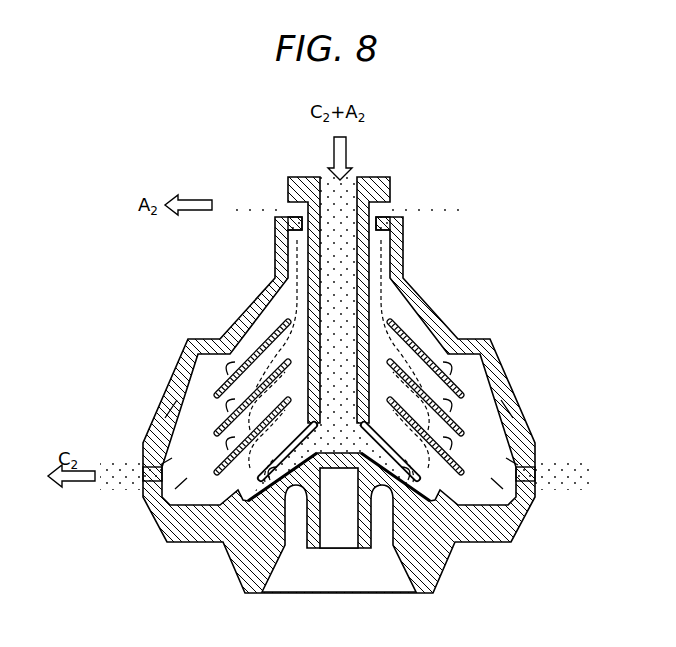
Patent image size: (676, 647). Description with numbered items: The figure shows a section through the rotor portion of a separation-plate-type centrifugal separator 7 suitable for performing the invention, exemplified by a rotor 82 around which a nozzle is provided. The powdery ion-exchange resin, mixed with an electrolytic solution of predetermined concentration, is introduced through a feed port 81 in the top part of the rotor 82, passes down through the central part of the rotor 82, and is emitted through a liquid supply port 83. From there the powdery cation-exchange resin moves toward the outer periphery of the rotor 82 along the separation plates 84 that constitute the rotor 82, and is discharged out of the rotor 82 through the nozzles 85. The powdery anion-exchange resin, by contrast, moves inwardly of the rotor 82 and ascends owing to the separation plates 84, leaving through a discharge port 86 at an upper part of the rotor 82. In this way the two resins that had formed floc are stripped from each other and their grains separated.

The centrifugal separator 7 is at (212, 328).
The feed port 81 is at (345, 184).
The rotor 82 is at (362, 267).
The liquid supply port 83 is at (422, 497).
The separation plates 84 is at (462, 393).
The nozzles 85 is at (537, 473).
The discharge port 86 is at (385, 224).